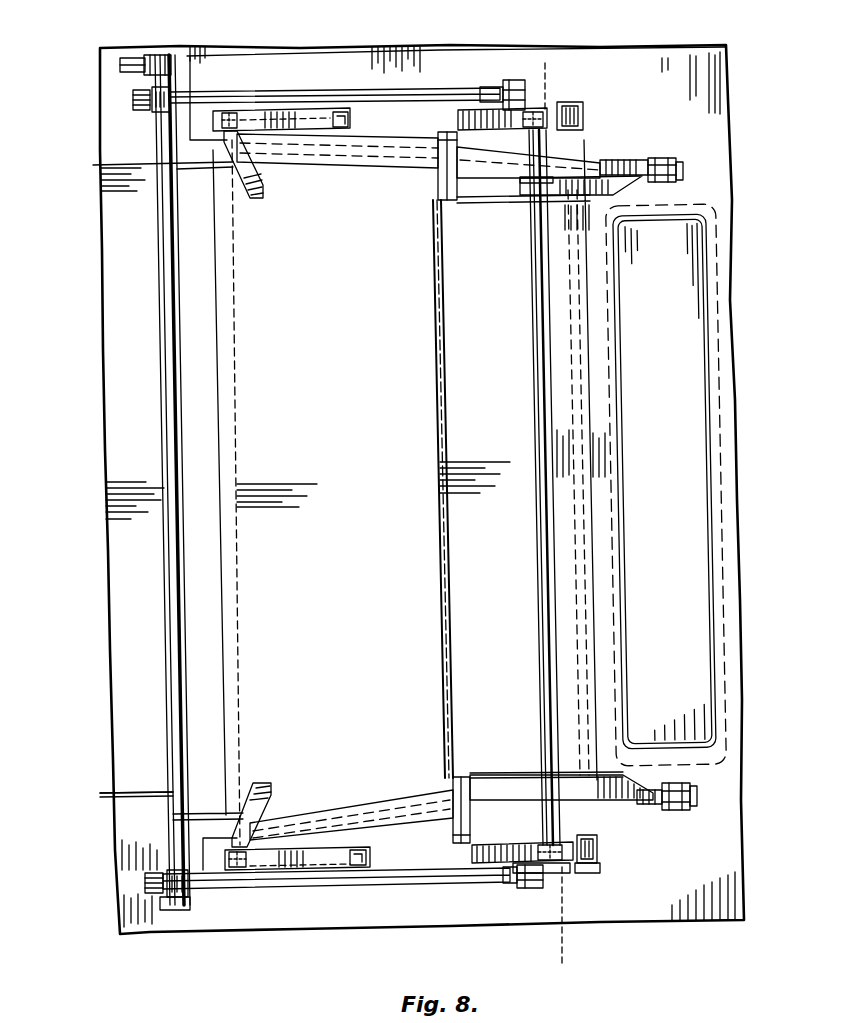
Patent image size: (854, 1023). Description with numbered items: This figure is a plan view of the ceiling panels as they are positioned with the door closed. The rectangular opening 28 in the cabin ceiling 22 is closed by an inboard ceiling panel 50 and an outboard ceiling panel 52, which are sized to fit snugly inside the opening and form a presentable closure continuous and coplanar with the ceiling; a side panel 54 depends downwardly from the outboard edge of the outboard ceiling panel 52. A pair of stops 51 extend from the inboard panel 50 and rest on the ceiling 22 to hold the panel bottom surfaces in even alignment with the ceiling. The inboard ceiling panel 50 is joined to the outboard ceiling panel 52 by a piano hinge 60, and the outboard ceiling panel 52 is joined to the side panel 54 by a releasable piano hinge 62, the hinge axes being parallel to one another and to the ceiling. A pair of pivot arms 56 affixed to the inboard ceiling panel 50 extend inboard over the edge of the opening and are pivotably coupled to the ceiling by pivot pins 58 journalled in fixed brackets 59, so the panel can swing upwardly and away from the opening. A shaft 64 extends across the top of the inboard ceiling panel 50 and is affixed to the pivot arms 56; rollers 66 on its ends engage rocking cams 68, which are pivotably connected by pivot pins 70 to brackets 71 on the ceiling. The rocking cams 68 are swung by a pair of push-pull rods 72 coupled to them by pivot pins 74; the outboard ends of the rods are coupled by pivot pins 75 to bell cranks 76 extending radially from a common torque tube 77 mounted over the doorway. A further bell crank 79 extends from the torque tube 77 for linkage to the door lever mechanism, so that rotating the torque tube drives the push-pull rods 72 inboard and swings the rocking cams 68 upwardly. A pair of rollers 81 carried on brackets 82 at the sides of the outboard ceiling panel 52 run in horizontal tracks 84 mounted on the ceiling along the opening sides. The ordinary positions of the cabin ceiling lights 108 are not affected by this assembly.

The cabin ceiling 22 is at (720, 197).
The rectangular opening 28 is at (343, 143).
The inboard ceiling panel 50 is at (474, 433).
The stops 51 is at (440, 132).
The outboard ceiling panel 52 is at (326, 433).
The side panel 54 is at (116, 438).
The pivot arms 56 is at (616, 170).
The pivot pins 58 is at (662, 158).
The fixed brackets 59 is at (676, 178).
The piano hinge 60 is at (440, 575).
The piano hinge 62 is at (240, 548).
The shaft 64 is at (560, 140).
The rollers 66 is at (561, 518).
The rocking cams 68 is at (476, 112).
The pivot pins 70 is at (586, 108).
The brackets 71 is at (598, 870).
The push-pull rods 72 is at (381, 91).
The pivot pins 74 is at (516, 80).
The pivot pins 75 is at (138, 112).
The bell cranks 76 is at (130, 98).
The torque tube 77 is at (130, 793).
The bell crank 79 is at (150, 60).
The rollers 81 is at (228, 115).
The brackets 82 is at (228, 140).
The horizontal tracks 84 is at (304, 119).
The cabin ceiling lights 108 is at (677, 343).